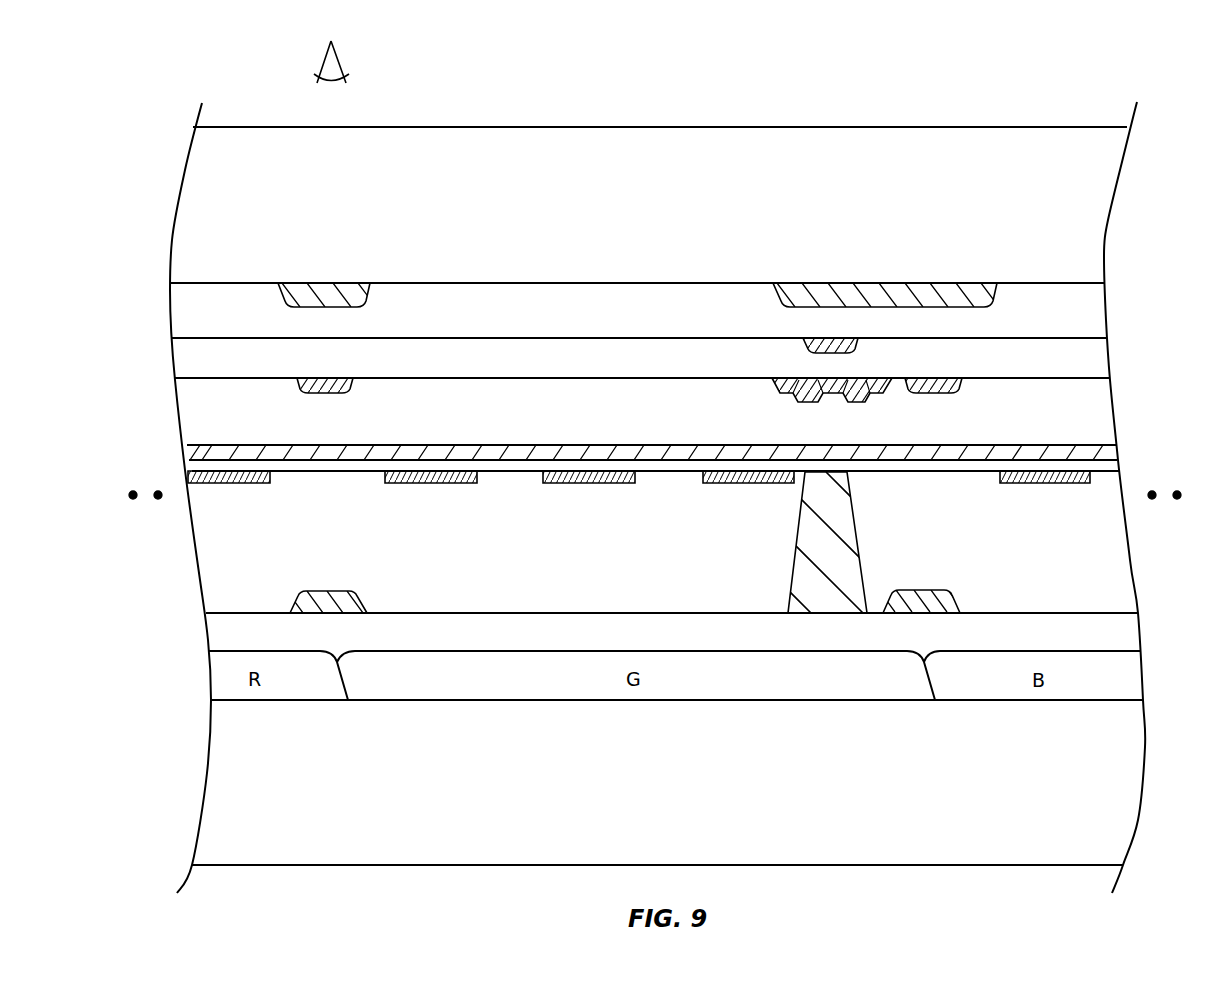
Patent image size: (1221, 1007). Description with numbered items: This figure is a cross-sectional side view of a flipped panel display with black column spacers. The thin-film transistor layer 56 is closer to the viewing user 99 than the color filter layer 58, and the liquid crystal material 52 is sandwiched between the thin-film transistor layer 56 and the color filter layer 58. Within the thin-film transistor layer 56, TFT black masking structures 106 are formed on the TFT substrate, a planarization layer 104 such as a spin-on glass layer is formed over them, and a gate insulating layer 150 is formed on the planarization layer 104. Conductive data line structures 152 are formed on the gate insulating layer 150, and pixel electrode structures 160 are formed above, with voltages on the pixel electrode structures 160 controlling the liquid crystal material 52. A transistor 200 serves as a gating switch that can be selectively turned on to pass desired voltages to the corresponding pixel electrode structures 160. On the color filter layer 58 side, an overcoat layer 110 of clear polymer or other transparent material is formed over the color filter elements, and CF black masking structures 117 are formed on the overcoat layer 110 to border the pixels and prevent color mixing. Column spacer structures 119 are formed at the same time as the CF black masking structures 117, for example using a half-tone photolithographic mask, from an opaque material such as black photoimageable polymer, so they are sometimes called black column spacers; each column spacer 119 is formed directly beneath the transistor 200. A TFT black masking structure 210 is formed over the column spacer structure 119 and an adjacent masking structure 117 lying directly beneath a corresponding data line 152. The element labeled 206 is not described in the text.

The liquid crystal material 52 is at (212, 540).
The thin-film transistor layer 56 is at (154, 213).
The color filter layer 58 is at (178, 779).
The user 99 is at (341, 61).
The planarization layer 104 is at (1092, 306).
The TFT black masking structures 106 is at (347, 291).
The TFT black masking structure 210 is at (872, 291).
The gate insulating layer 150 is at (1100, 359).
The semiconductor layer 206 is at (810, 343).
The transistor 200 is at (782, 403).
The data line structures 152 is at (330, 385).
The pixel electrode structures 160 is at (460, 482).
The column spacer structures 119 is at (845, 518).
The CF black masking structure 117 is at (320, 592).
The overcoat layer 110 is at (1128, 633).